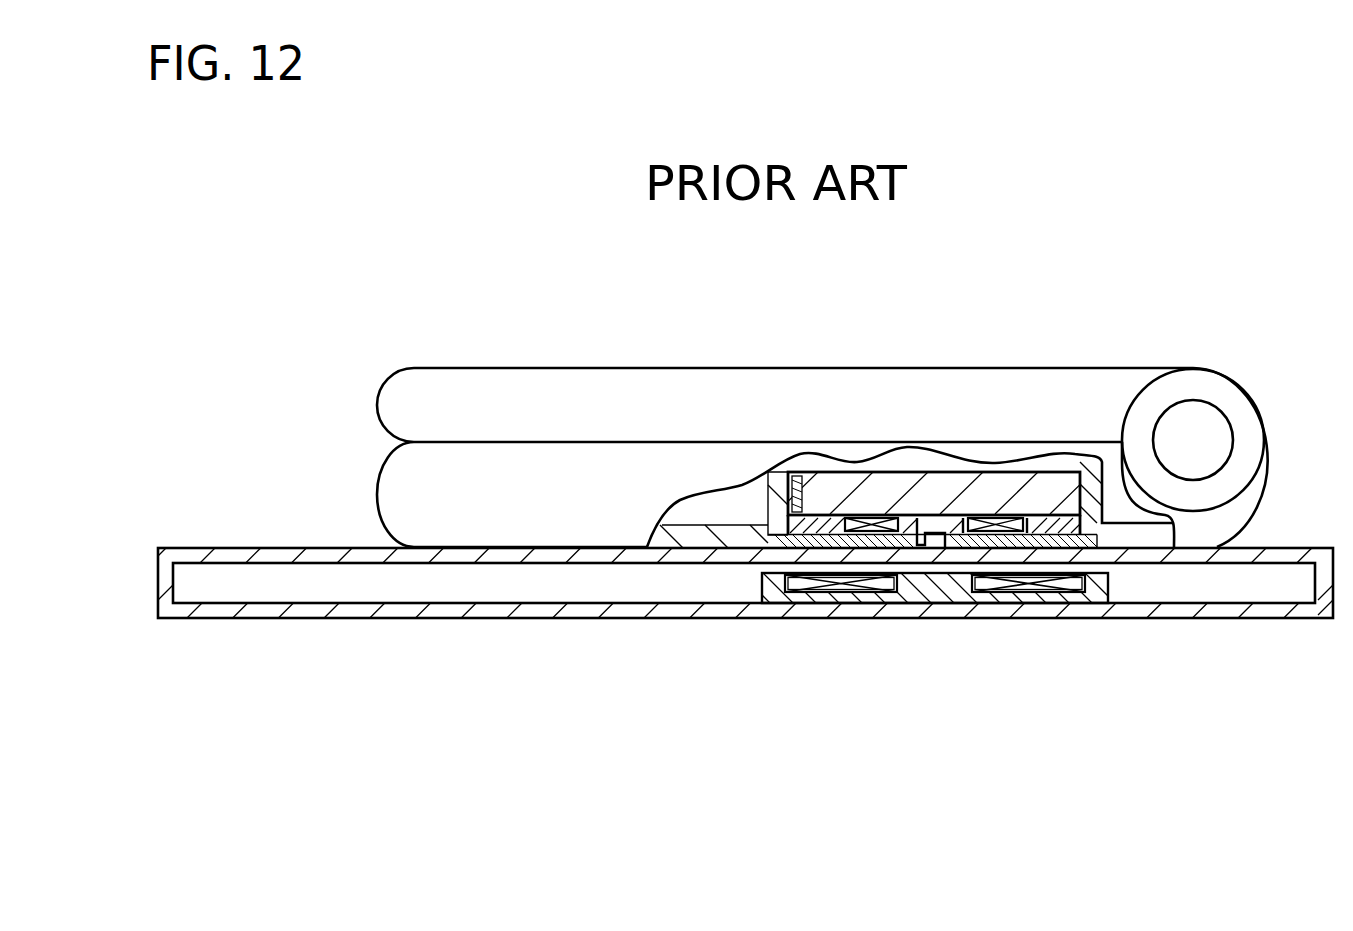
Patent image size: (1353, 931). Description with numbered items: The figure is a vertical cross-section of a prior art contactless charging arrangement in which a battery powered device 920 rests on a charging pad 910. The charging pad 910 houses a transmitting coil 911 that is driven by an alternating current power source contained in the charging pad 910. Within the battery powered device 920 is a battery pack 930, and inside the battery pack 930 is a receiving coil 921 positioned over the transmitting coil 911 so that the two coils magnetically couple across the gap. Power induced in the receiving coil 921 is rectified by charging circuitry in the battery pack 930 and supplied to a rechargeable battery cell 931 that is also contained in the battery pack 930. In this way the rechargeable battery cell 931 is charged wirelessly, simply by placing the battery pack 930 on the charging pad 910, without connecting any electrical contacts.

The charging pad 910 is at (460, 648).
The transmitting coil 911 is at (1030, 590).
The battery powered device 920 is at (532, 338).
The receiving coil 921 is at (870, 517).
The battery pack 930 is at (1020, 468).
The rechargeable battery cell 931 is at (1058, 485).